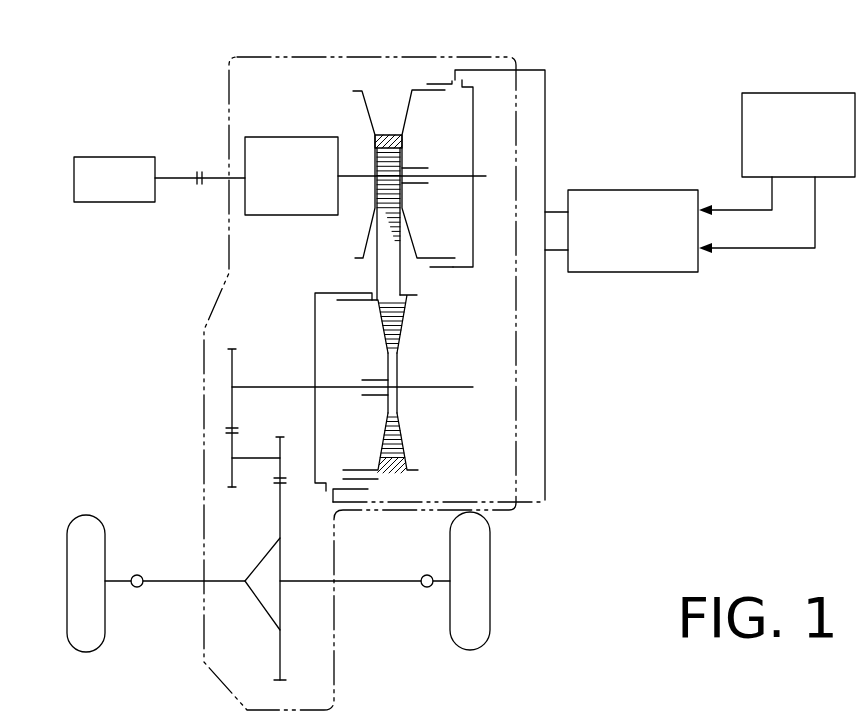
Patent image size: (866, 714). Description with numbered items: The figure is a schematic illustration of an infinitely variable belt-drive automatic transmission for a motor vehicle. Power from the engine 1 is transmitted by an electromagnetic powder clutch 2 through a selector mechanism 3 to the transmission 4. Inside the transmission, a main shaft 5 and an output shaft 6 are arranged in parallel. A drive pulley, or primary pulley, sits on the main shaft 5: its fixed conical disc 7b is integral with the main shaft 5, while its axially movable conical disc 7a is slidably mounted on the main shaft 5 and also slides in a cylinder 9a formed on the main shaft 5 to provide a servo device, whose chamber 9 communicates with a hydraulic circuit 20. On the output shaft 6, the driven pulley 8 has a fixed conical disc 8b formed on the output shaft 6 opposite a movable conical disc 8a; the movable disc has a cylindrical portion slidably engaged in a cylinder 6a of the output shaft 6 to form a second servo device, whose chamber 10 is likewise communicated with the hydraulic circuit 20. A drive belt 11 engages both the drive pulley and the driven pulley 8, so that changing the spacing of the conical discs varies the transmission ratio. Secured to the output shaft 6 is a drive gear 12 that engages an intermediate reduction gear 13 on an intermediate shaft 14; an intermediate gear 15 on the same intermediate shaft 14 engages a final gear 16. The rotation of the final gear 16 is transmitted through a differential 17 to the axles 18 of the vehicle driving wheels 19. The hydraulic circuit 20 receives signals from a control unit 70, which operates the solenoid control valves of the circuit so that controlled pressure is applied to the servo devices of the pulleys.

The engine 1 is at (122, 156).
The electromagnetic powder clutch 2 is at (200, 170).
The selector mechanism 3 is at (294, 137).
The transmission 4 is at (398, 150).
The main shaft 5 is at (353, 180).
The output shaft 6 is at (275, 387).
The cylinder of the output shaft 6a is at (337, 293).
The axially movable conical disc 7a is at (418, 88).
The fixed conical disc 7b is at (364, 112).
The driven pulley 8 is at (398, 384).
The movable conical disc 8a is at (372, 308).
The fixed conical disc 8b is at (400, 332).
The chamber 9 is at (458, 137).
The cylinder 9a is at (453, 270).
The chamber 10 is at (313, 322).
The drive belt 11 is at (397, 470).
The drive gear 12 is at (233, 344).
The intermediate reduction gear 13 is at (235, 490).
The intermediate shaft 14 is at (253, 457).
The intermediate gear 15 is at (280, 437).
The final gear 16 is at (280, 682).
The differential 17 is at (265, 563).
The axles 18 is at (122, 585).
The driving wheels 19 is at (97, 543).
The hydraulic circuit 20 is at (628, 272).
The control unit 70 is at (777, 92).